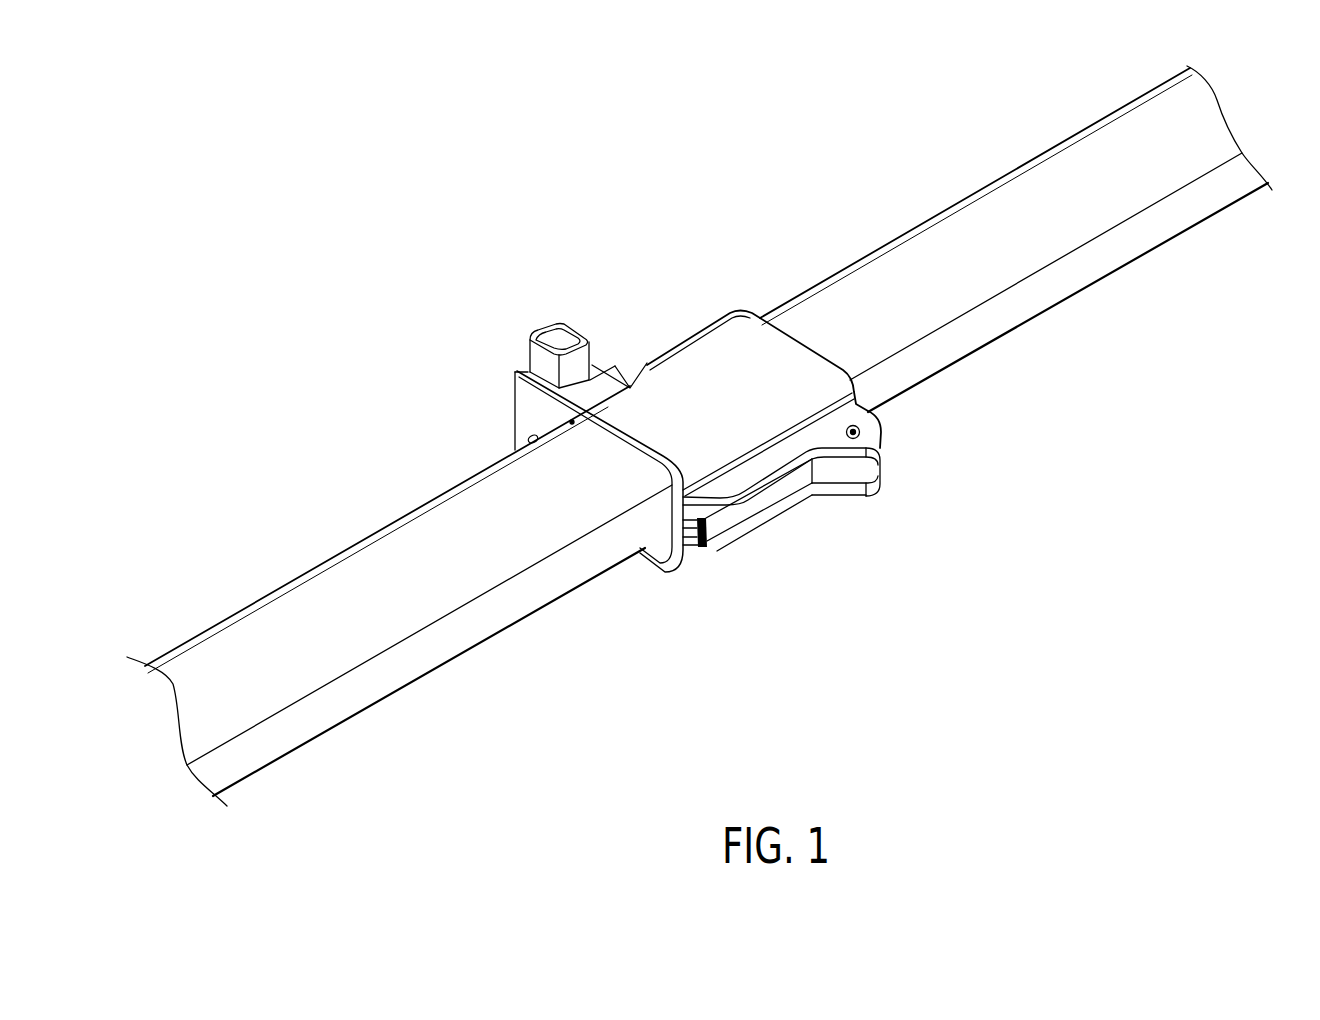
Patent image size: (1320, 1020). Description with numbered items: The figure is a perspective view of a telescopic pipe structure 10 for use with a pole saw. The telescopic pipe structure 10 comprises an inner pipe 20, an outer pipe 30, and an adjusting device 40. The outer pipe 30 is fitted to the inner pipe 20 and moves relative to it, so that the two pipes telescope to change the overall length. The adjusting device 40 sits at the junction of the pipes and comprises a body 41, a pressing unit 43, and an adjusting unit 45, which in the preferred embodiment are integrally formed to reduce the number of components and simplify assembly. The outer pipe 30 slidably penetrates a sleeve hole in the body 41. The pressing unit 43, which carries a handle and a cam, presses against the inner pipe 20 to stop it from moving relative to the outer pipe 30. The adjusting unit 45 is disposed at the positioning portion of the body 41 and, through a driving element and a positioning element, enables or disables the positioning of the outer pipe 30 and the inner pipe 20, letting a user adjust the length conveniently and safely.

The telescopic pipe structure 10 is at (505, 225).
The inner pipe 20 is at (955, 240).
The outer pipe 30 is at (392, 545).
The adjusting device 40 is at (690, 399).
The body 41 is at (723, 368).
The pressing unit 43 is at (790, 520).
The adjusting unit 45 is at (530, 358).